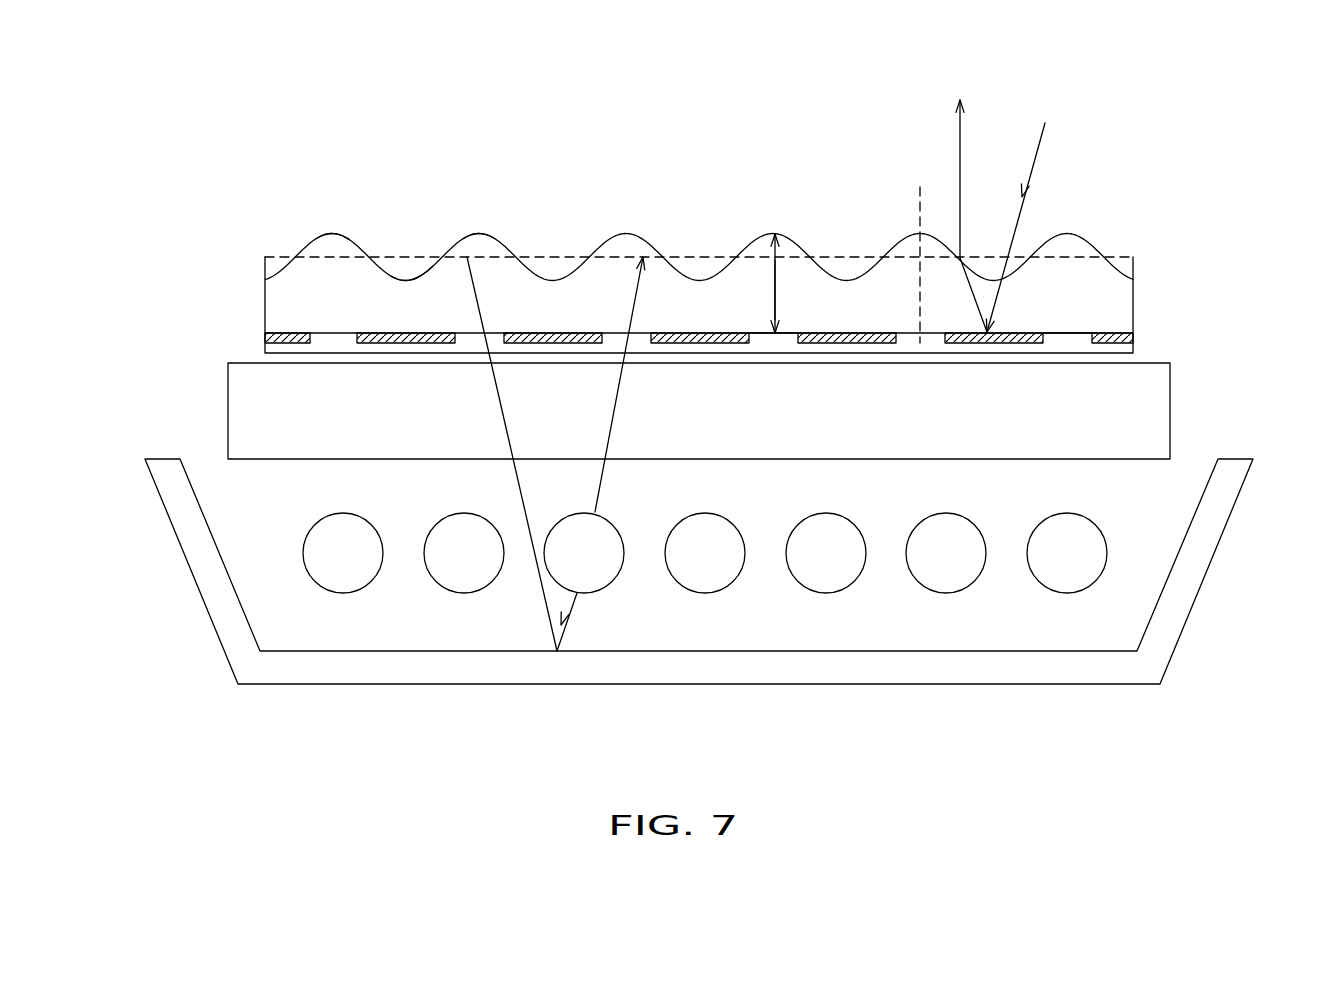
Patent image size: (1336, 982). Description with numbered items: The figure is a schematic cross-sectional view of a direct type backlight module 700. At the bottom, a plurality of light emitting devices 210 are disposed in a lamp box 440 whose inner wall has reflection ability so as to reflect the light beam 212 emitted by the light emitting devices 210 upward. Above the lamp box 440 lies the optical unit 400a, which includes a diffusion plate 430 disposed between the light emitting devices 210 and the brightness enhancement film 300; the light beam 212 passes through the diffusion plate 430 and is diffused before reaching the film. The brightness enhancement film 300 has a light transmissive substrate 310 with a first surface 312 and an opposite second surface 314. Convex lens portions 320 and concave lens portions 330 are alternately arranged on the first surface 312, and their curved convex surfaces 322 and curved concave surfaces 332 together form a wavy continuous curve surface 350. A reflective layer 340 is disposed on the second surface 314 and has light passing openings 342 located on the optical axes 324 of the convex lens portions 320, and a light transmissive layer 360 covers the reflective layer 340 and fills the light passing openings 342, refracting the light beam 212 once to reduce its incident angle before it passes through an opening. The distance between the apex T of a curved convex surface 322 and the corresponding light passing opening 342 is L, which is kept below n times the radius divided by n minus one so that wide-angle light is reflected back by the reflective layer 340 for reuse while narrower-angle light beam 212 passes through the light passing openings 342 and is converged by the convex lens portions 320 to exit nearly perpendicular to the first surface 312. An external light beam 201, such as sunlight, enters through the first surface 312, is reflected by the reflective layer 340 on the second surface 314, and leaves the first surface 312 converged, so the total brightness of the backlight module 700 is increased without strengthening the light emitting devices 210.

The backlight module 700 is at (1203, 755).
The brightness enhancement film 300 is at (1143, 300).
The light transmissive substrate 310 is at (282, 303).
The wavy continuous curve surface 350 is at (387, 128).
The curved convex surface 322 is at (332, 228).
The curved concave surface 332 is at (398, 271).
The concave lens portion 330 is at (420, 274).
The convex lens portion 320 is at (478, 243).
The light transmissive layer 360 is at (273, 348).
The reflective layer 340 is at (870, 333).
The light passing opening 342 is at (772, 345).
The second surface 314 is at (1051, 346).
The apex T is at (774, 268).
The distance L is at (778, 290).
The optical axis 324 is at (922, 213).
The external light beam 201 is at (1035, 158).
The first surface 312 is at (987, 257).
The optical unit 400a is at (1195, 428).
The diffusion plate 430 is at (1153, 382).
The lamp box 440 is at (1208, 530).
The light emitting device 210 is at (1088, 560).
The light beam 212 is at (538, 570).